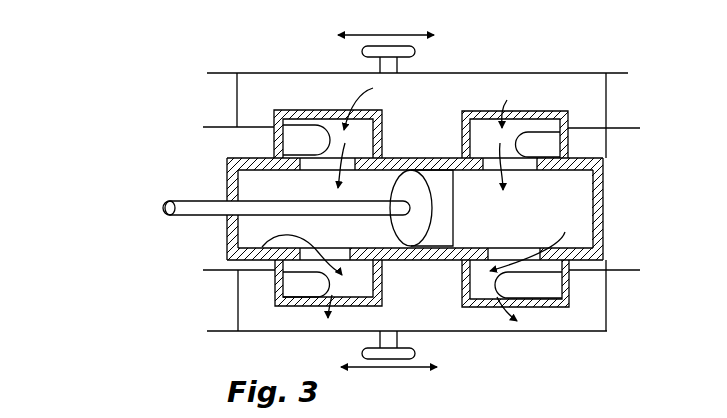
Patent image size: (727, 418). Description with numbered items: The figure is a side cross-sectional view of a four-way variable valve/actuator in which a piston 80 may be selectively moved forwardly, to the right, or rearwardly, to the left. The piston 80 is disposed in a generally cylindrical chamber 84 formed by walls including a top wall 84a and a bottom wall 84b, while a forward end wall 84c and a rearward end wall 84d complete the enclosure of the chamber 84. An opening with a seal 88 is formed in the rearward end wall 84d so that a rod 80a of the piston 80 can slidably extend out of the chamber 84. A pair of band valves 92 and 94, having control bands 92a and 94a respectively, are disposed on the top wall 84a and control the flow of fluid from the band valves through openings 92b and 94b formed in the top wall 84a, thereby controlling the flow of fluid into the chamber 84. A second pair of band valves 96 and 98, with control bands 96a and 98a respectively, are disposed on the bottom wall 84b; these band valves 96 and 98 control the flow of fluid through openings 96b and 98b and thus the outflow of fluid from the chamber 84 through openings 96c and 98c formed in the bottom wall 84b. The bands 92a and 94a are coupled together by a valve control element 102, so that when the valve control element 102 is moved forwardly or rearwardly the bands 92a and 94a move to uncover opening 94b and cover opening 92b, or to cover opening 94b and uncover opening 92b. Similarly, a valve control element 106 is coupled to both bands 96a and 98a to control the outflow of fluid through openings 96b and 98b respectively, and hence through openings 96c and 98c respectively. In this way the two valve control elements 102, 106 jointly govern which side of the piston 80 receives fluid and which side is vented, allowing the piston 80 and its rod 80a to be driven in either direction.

The piston 80 is at (125, 197).
The rod 80a is at (184, 214).
The chamber 84 is at (605, 215).
The top wall 84a is at (594, 161).
The bottom wall 84b is at (603, 251).
The forward end wall 84c is at (605, 193).
The rearward end wall 84d is at (228, 228).
The seal 88 is at (230, 198).
The band valve 92 is at (305, 115).
The control band 92a is at (203, 127).
The opening 92b is at (320, 171).
The band valve 94 is at (545, 115).
The control band 94a is at (632, 128).
The opening 94b is at (588, 214).
The band valve 96 is at (384, 282).
The control band 96a is at (213, 271).
The opening 96b is at (315, 308).
The opening 96c is at (230, 260).
The band valve 98 is at (569, 289).
The control band 98a is at (628, 272).
The opening 98b is at (523, 308).
The opening 98c is at (562, 237).
The valve control element 102 is at (462, 75).
The valve control element 106 is at (603, 333).